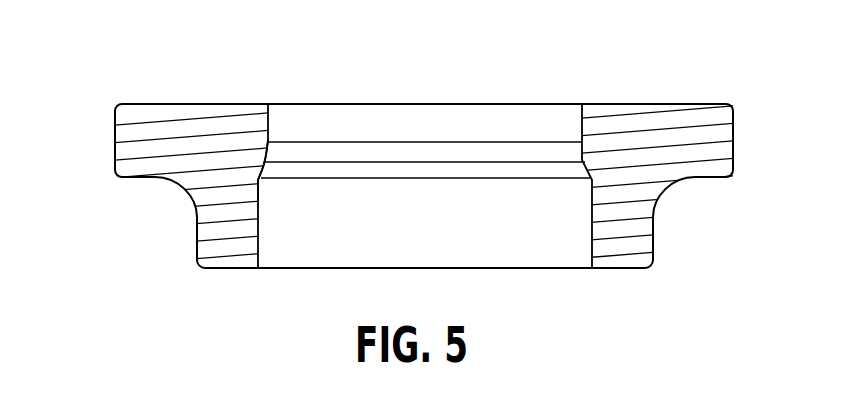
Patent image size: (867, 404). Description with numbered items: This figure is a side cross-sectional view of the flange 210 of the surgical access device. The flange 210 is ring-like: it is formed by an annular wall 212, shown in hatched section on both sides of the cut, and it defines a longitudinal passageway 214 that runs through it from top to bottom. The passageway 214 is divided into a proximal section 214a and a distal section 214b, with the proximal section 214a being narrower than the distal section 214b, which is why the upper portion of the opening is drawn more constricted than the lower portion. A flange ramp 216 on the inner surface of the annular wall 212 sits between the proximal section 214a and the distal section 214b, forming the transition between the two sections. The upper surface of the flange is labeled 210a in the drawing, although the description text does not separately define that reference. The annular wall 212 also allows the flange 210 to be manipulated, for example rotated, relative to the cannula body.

The flange 210 is at (380, 149).
The top surface of insert 210a is at (457, 87).
The annular wall 212 is at (422, 185).
The longitudinal passageway 214 is at (442, 233).
The proximal section 214a is at (430, 122).
The distal section 214b is at (505, 252).
The flange ramp 216 is at (263, 173).